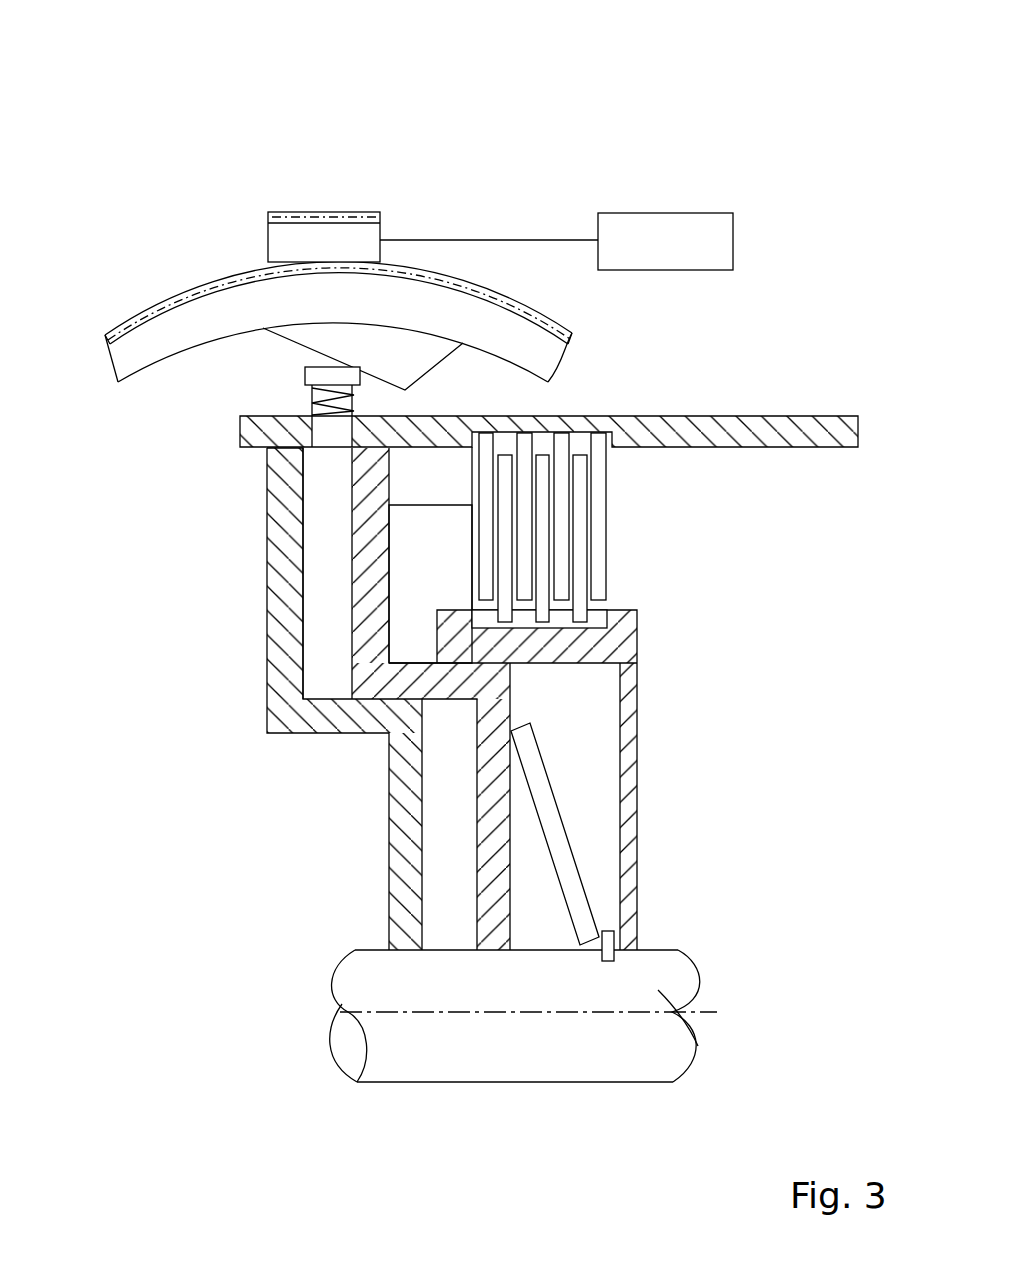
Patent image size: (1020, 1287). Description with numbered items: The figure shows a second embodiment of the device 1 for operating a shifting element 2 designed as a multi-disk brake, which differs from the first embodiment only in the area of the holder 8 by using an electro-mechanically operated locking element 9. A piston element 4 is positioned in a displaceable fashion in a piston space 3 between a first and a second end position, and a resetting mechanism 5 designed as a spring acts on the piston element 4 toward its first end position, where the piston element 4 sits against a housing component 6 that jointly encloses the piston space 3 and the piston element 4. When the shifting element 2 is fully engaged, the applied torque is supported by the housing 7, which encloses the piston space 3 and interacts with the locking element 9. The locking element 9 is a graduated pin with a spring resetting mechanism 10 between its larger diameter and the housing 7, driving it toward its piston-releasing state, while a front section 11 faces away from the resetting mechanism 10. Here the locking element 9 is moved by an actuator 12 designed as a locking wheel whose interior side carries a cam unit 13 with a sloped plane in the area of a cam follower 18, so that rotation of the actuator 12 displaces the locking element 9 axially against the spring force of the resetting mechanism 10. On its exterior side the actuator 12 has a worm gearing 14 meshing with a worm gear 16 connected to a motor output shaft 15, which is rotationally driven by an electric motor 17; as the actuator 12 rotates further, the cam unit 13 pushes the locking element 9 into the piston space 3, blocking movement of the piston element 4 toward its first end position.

The device 1 is at (140, 116).
The shifting element 2 is at (480, 697).
The piston space 3 is at (317, 600).
The piston element 4 is at (370, 543).
The resetting mechanism 5 is at (560, 844).
The housing component 6 is at (270, 733).
The housing 7 is at (738, 423).
The holder 8 is at (257, 248).
The locking element 9 is at (338, 400).
The spring resetting mechanism 10 is at (311, 396).
The front section 11 is at (323, 366).
The actuator 12 is at (133, 322).
The cam unit 13 is at (300, 341).
The worm gearing 14 is at (190, 288).
The motor output shaft 15 is at (437, 240).
The worm gear 16 is at (305, 242).
The electric motor 17 is at (718, 242).
The cam follower 18 is at (418, 360).